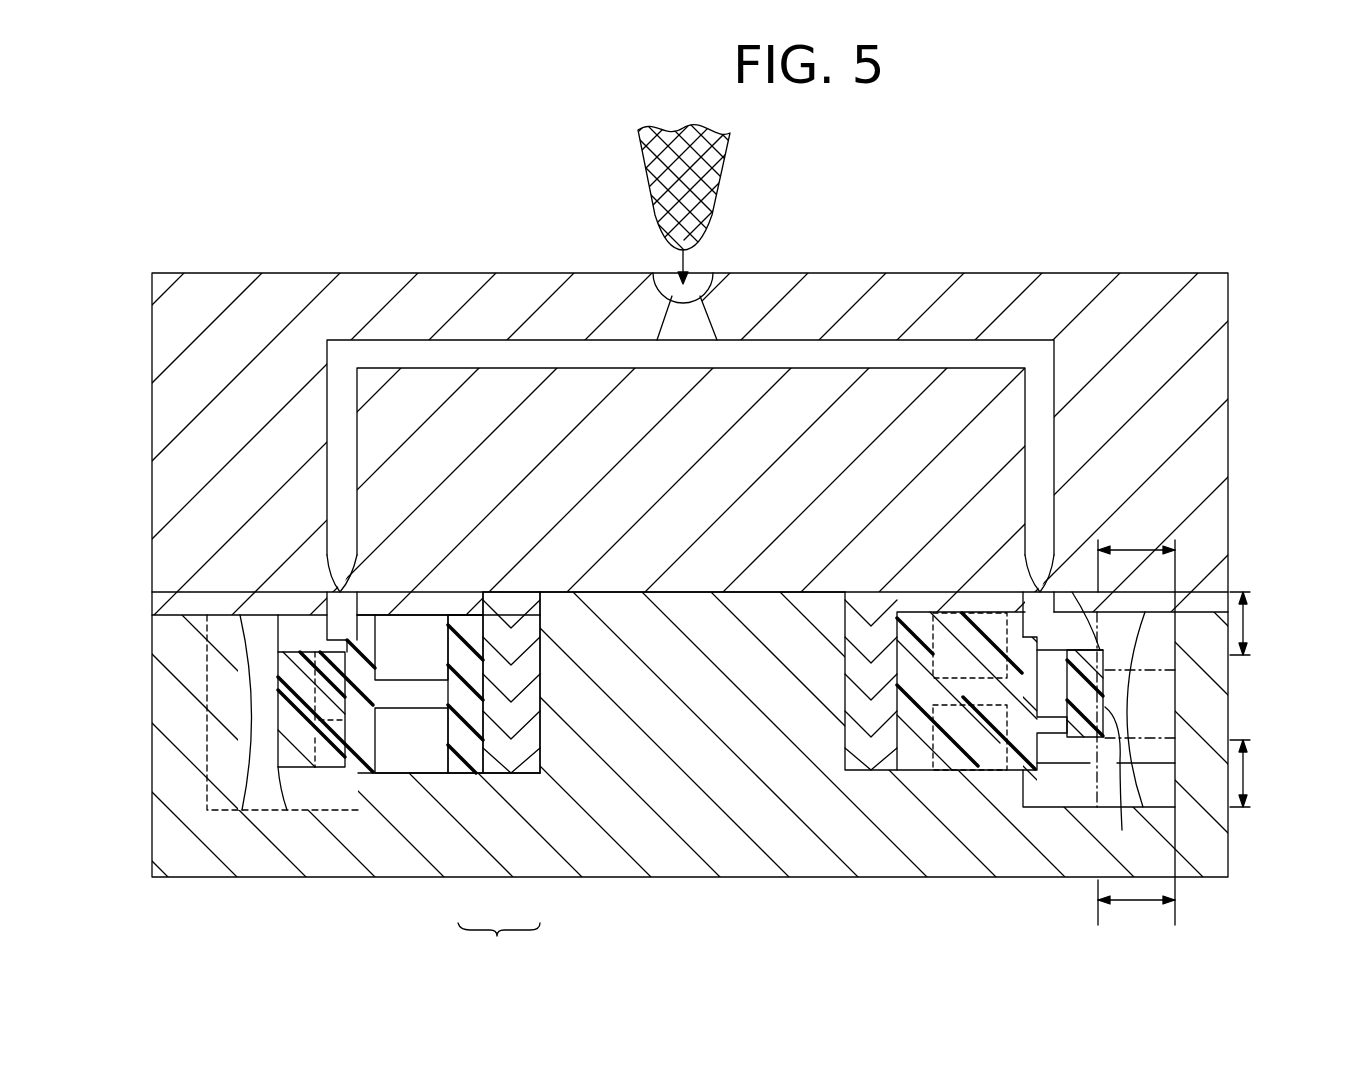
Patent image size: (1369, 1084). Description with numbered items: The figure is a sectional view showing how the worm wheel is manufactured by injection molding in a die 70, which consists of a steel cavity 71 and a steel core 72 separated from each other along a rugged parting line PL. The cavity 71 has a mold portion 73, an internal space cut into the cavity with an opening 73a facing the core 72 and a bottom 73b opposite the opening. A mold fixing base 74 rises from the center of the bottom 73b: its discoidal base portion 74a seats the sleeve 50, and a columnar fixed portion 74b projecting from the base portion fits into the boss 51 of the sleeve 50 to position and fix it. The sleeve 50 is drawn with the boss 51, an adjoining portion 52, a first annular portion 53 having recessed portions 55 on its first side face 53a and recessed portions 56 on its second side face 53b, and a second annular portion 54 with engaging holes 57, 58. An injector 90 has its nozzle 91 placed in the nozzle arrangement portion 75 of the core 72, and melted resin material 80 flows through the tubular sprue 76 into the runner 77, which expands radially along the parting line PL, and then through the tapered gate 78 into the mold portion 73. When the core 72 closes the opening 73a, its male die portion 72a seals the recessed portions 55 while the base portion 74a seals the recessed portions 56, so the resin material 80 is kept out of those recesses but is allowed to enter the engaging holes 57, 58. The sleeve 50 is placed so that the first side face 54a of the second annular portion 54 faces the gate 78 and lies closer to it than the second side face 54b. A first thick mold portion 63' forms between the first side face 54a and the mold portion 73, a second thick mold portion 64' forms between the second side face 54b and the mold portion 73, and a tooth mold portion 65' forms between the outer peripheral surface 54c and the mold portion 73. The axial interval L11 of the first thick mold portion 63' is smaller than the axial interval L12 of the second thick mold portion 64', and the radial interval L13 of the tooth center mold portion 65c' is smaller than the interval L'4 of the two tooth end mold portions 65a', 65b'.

The sleeve 50 is at (499, 944).
The boss 51 is at (510, 780).
The second insert block 52 is at (462, 780).
The first annular portion 53 is at (455, 615).
The first side face 53a is at (422, 615).
The second side face 53b is at (441, 777).
The second annular portion 54 is at (276, 748).
The first side face 54a is at (1065, 612).
The second side face 54b is at (1062, 808).
The outer peripheral surface 54c is at (1124, 802).
The recessed portions 55 is at (392, 626).
The recessed portions 56 is at (447, 712).
The engaging holes 57 is at (1020, 680).
The engaging holes 58 is at (330, 760).
The first thick mold portion 63' is at (1032, 588).
The second thick mold portion 64' is at (1054, 768).
The tooth mold portion 65' is at (1244, 709).
The tooth end mold portion 65a' is at (1208, 674).
The tooth end mold portion 65b' is at (1208, 738).
The tooth center mold portion 65c' is at (1231, 707).
The die 70 is at (80, 523).
The cavity 71 is at (150, 664).
The core 72 is at (150, 530).
The male die portion 72a is at (490, 600).
The mold portion 73 is at (263, 594).
The opening 73a is at (330, 593).
The bottom 73b is at (300, 812).
The mold fixing base 74 is at (698, 820).
The base portion 74a is at (398, 772).
The fixed portion 74b is at (628, 592).
The nozzle arrangement portion 75 is at (706, 272).
The sprue 76 is at (702, 320).
The runner 77 is at (416, 346).
The gate 78 is at (352, 580).
The resin material 80 is at (705, 206).
The injector 90 is at (724, 160).
The nozzle 91 is at (668, 248).
The parting line PL is at (160, 598).
The interval of first thick mold portion L11 is at (1243, 627).
The interval of second thick mold portion L12 is at (1243, 780).
The interval of tooth center mold portion L13 is at (1135, 550).
The dimension L'4 (=L10) L'4 is at (1171, 916).